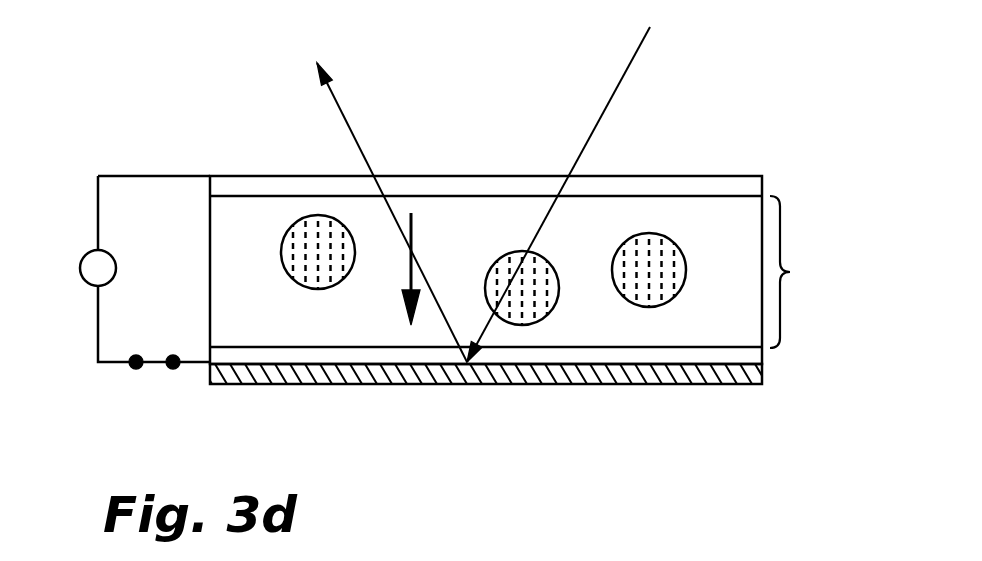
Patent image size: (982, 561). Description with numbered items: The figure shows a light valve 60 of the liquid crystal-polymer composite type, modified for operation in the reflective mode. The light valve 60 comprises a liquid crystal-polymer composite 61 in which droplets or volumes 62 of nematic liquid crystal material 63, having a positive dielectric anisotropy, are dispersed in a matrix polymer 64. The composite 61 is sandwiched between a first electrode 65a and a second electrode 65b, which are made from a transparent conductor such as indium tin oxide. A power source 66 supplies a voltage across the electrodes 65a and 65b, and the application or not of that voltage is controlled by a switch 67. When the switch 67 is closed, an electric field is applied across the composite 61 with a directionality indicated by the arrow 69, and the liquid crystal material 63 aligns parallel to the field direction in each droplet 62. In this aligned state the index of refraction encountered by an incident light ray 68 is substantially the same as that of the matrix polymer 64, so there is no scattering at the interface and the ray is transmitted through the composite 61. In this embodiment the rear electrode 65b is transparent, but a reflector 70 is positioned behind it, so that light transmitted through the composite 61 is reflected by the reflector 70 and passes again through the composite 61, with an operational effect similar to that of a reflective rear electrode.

The light valve 60 is at (193, 117).
The liquid crystal-polymer composite 61 is at (807, 272).
The droplets or volumes 62 is at (667, 305).
The nematic liquid crystal material 63 is at (315, 272).
The matrix polymer 64 is at (606, 318).
The first electrode 65a is at (733, 175).
The second electrode 65b is at (762, 387).
The power source 66 is at (80, 266).
The switch 67 is at (173, 362).
The incident light ray 68 is at (497, 184).
The arrow 69 is at (413, 237).
The reflector 70 is at (393, 383).